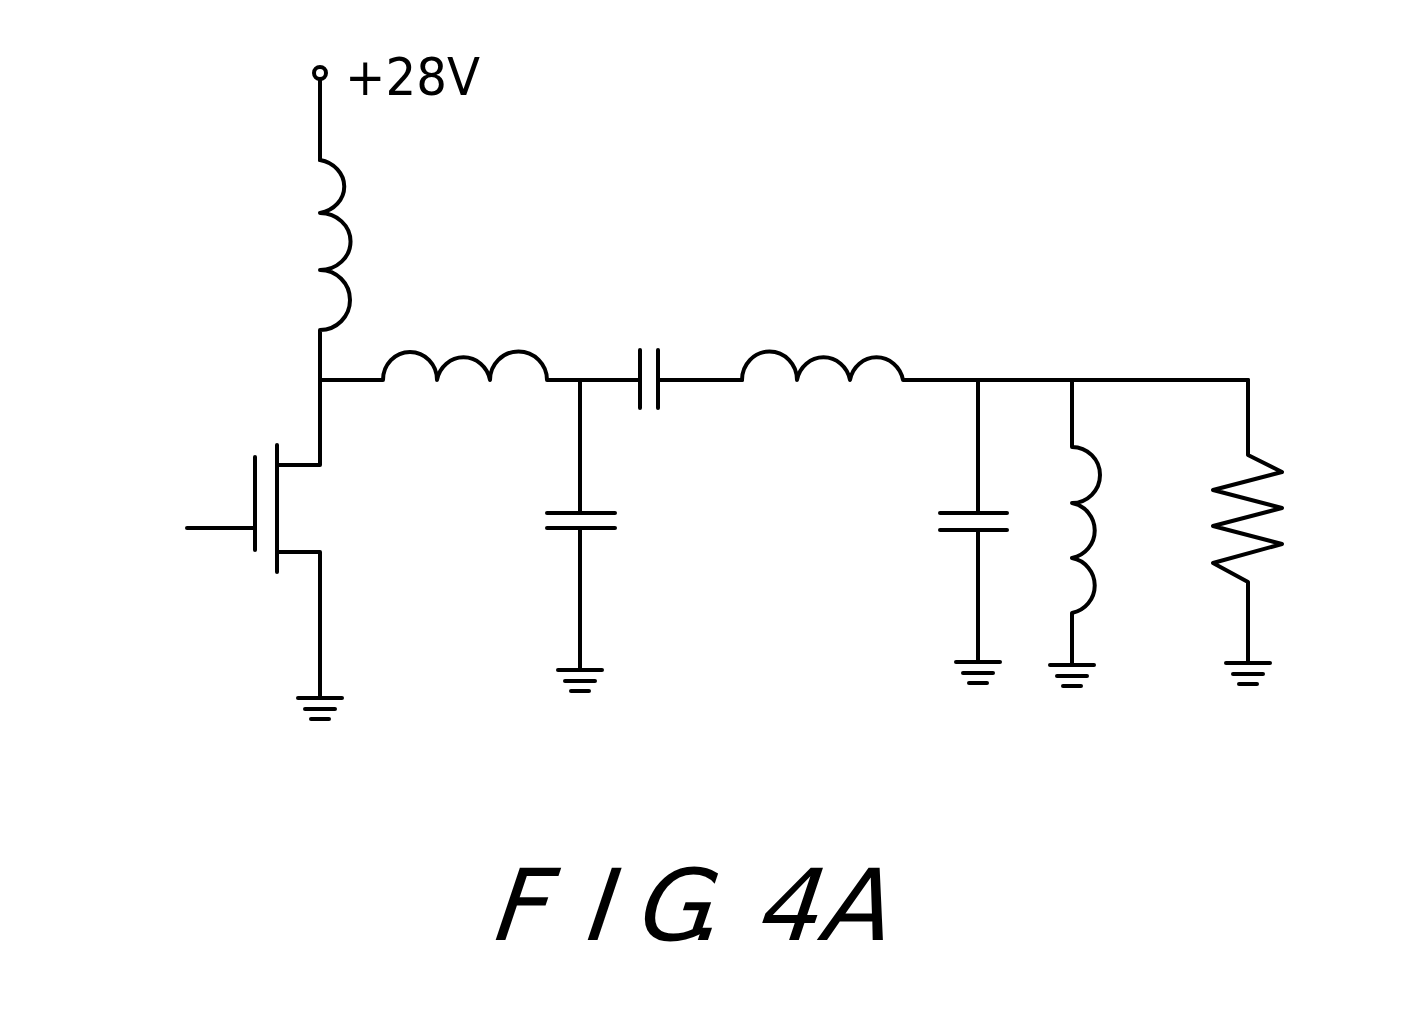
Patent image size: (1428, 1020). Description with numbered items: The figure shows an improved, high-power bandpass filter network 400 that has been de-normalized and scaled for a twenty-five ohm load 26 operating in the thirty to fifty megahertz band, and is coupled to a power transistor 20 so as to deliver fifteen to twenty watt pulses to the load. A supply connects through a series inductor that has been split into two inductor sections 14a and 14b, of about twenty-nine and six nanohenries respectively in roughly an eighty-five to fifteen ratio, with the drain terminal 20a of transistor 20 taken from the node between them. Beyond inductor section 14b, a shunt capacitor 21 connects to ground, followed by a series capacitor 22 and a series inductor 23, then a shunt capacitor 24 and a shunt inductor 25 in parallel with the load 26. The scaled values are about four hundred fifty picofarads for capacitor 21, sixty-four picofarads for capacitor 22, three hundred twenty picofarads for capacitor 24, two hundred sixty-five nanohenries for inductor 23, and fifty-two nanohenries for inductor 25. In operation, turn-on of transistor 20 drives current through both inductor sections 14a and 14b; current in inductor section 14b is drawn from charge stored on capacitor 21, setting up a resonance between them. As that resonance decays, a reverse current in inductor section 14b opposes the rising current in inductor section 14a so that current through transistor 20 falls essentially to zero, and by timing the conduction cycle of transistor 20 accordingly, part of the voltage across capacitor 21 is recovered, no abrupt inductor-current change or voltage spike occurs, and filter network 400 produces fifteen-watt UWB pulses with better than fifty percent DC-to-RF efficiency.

The inductor section 14a is at (330, 270).
The inductor section 14b is at (488, 356).
The transistor 20 is at (250, 497).
The drain terminal 20a is at (327, 436).
The capacitor 21 is at (597, 532).
The capacitor 22 is at (658, 397).
The inductor 23 is at (827, 352).
The capacitor 24 is at (950, 532).
The inductor 25 is at (1100, 532).
The load 26 is at (1255, 557).
The filter network 400 is at (948, 307).